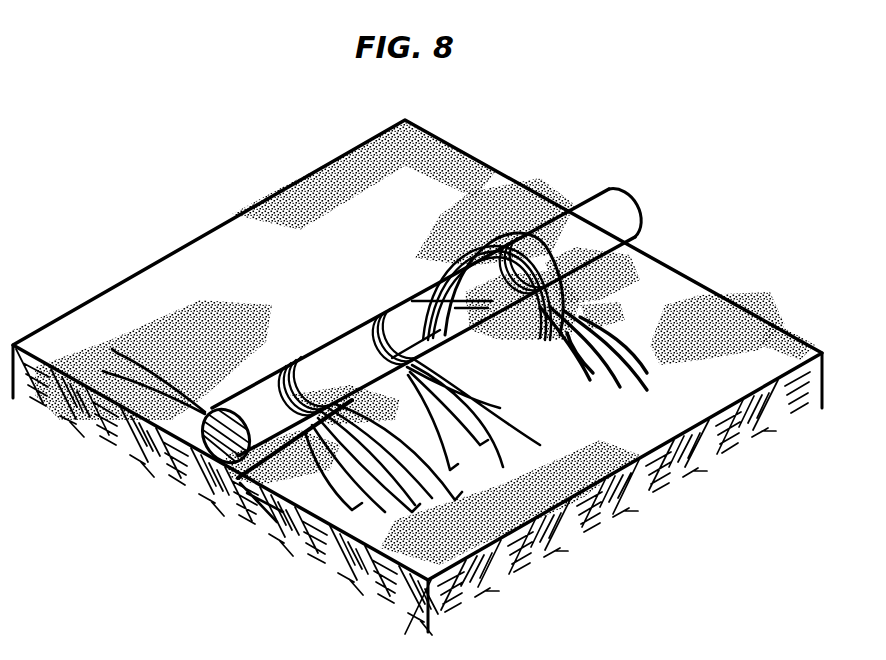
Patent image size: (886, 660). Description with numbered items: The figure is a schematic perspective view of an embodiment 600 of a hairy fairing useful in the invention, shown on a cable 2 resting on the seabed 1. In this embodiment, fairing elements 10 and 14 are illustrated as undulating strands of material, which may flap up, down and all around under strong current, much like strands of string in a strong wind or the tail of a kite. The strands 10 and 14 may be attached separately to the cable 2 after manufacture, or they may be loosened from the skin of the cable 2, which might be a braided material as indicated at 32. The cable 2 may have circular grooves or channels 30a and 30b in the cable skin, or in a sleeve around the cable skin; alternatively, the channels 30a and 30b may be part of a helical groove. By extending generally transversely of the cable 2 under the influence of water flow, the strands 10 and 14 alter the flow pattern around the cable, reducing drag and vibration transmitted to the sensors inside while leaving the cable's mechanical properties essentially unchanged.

The embodiment of a hairy fairing 600 is at (250, 255).
The ground / soil 1 is at (722, 322).
The cable 2 is at (603, 192).
The circular groove or channel 30a is at (283, 368).
The circular groove or channel 30b is at (542, 243).
The braided material 32 is at (433, 290).
The fairing elements 10 is at (553, 373).
The fairing elements 14 is at (153, 368).